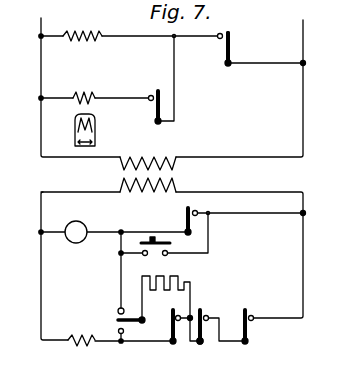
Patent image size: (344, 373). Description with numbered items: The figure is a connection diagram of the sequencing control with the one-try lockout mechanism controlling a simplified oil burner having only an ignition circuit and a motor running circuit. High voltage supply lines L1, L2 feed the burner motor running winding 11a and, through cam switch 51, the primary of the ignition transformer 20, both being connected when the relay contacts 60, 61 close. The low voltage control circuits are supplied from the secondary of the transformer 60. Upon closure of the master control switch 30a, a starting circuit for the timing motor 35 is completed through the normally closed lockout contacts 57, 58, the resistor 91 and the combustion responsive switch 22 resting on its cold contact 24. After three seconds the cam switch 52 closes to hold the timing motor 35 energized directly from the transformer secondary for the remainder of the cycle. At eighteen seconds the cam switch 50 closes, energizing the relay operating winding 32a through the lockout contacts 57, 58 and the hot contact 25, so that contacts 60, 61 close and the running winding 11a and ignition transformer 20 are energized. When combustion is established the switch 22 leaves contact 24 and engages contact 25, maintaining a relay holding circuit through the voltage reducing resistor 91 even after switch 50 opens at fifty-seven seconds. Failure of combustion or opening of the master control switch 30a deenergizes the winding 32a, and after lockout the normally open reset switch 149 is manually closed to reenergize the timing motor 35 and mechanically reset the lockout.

The high voltage power supply line L1 is at (41, 30).
The high voltage power supply line L2 is at (303, 32).
The motor running winding 11a is at (94, 42).
The relay contact 60 is at (218, 39).
The relay contact 61 is at (231, 50).
The ignition transformer 20 is at (96, 106).
The cam switch 51 is at (157, 94).
The timing motor 35 is at (75, 229).
The cam switch 52 is at (186, 215).
The reset switch 149 is at (171, 244).
The resistor 91 is at (180, 281).
The cold contact 24 is at (118, 309).
The combustion responsive switch 22 is at (118, 320).
The hot contact 25 is at (128, 331).
The relay operating winding 32a is at (107, 352).
The cam switch 50 is at (175, 318).
The lockout contact 57 is at (208, 316).
The lockout contact 58 is at (203, 343).
The master control switch 30a is at (254, 321).